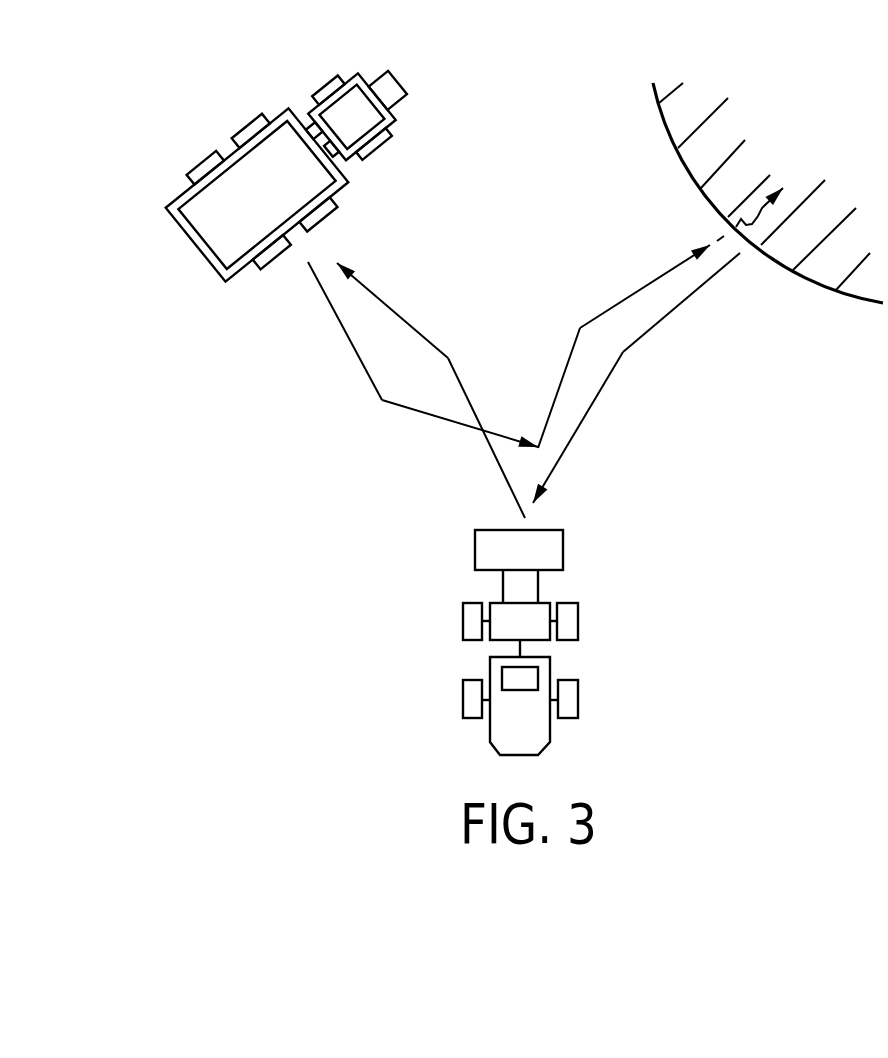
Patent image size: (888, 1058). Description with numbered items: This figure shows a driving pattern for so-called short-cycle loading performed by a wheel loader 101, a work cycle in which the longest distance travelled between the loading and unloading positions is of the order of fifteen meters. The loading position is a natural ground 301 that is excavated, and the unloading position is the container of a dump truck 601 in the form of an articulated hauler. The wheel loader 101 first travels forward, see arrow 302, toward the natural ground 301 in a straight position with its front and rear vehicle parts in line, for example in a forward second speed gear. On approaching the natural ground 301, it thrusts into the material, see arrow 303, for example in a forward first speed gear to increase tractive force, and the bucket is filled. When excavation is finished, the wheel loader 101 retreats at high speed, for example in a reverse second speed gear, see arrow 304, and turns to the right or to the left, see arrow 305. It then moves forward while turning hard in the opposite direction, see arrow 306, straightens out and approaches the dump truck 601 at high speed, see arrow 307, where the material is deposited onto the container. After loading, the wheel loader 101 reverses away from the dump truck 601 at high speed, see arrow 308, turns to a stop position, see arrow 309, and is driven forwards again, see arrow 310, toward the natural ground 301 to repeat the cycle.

The wheel loader 101 is at (598, 638).
The dump truck 601 is at (203, 238).
The natural ground 301 is at (785, 253).
The arrow 302 is at (630, 295).
The arrow 303 is at (735, 229).
The arrow 304 is at (663, 317).
The arrow 305 is at (583, 418).
The arrow 306 is at (465, 393).
The arrow 307 is at (383, 304).
The arrow 308 is at (360, 365).
The signal path 309 is at (430, 417).
The arrow 310 is at (568, 360).